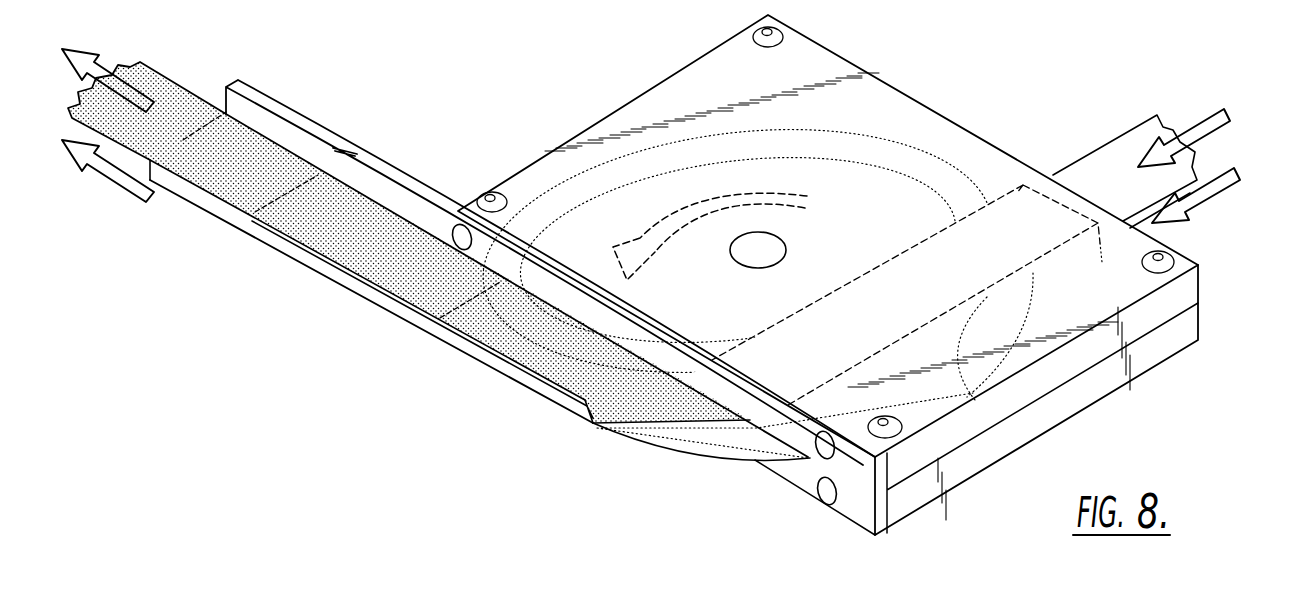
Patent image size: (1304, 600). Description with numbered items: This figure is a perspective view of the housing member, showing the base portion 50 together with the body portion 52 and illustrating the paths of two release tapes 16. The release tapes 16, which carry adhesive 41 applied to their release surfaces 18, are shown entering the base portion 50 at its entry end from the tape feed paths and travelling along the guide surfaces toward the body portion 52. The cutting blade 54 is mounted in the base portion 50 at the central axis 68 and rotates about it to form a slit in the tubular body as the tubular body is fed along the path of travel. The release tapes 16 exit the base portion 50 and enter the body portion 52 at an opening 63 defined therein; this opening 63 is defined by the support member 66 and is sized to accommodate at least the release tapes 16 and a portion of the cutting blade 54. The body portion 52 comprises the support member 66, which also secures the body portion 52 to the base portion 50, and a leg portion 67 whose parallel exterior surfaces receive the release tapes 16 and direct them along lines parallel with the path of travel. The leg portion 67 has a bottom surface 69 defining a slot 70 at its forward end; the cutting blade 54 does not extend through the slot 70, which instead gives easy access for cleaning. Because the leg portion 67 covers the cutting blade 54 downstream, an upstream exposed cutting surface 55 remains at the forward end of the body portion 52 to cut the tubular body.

The release tapes 16 is at (1197, 163).
The release surfaces 18 is at (358, 262).
The adhesive 41 is at (303, 227).
The base portion 50 is at (712, 78).
The body portion 52 is at (432, 181).
The cutting blade 54 is at (668, 465).
The exposed cutting surface 55 is at (633, 440).
The opening 63 is at (782, 443).
The support member 66 is at (304, 128).
The leg portion 67 is at (435, 338).
The central axis 68 is at (777, 253).
The bottom surface 69 is at (397, 312).
The slot 70 is at (557, 410).